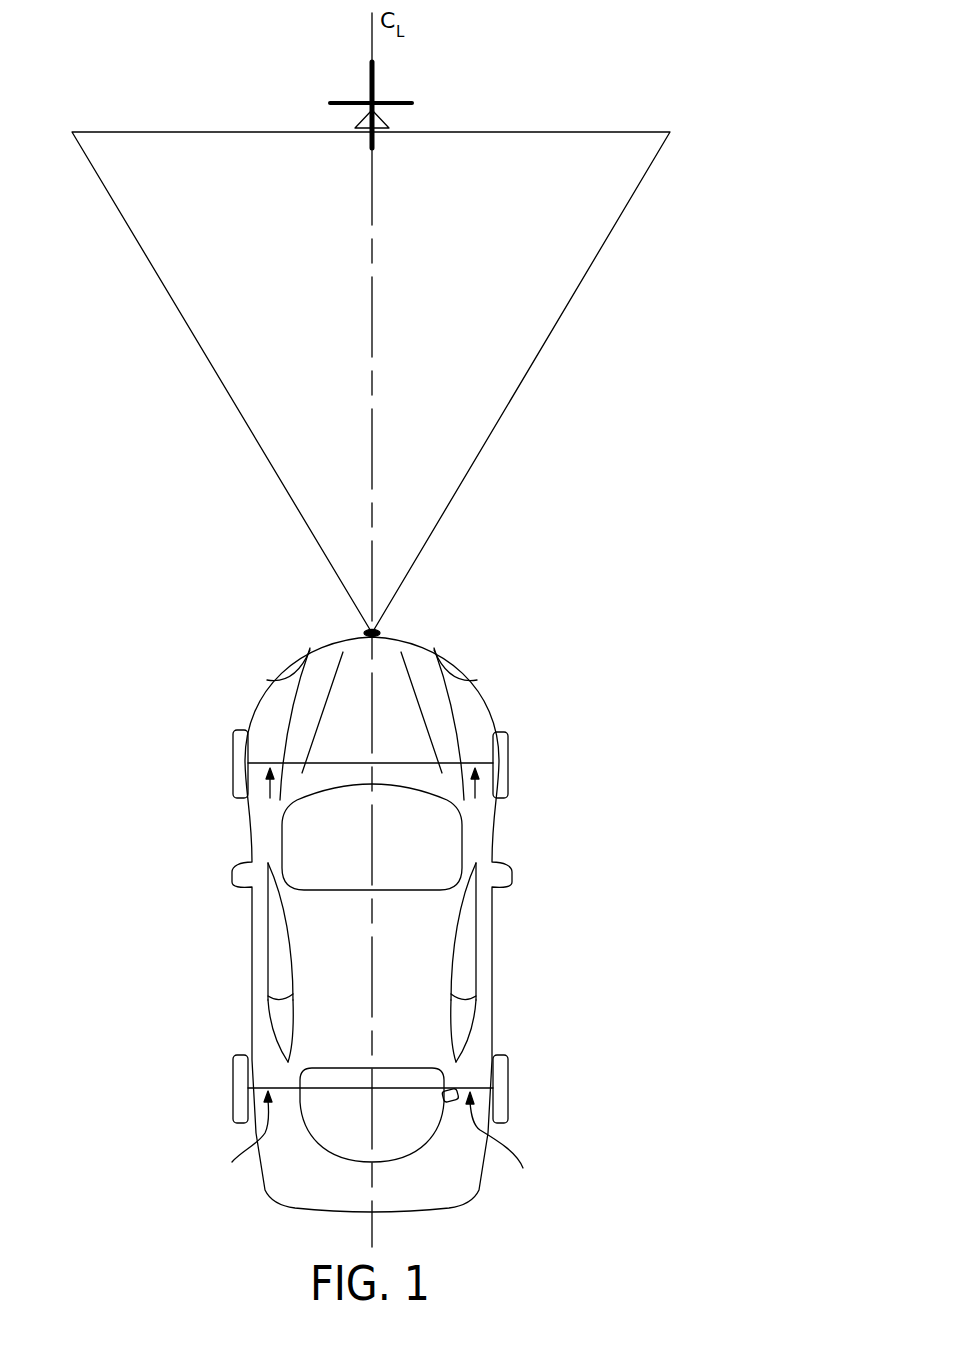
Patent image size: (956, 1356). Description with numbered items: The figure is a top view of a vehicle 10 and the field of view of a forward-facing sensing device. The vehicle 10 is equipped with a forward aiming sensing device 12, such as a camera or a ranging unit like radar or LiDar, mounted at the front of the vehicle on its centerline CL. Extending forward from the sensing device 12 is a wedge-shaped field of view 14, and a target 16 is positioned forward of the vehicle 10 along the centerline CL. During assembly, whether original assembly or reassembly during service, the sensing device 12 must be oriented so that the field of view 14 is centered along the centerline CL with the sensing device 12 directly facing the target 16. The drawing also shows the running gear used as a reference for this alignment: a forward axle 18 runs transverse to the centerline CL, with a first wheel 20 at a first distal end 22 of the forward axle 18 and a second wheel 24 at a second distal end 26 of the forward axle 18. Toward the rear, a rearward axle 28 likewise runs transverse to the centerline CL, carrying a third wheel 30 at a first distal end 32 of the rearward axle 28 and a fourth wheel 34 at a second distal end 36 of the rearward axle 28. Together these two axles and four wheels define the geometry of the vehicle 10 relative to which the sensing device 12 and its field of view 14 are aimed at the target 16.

The vehicle 10 is at (527, 982).
The sensing device 12 is at (381, 633).
The field of view 14 is at (603, 193).
The target 16 is at (390, 128).
The forward axle 18 is at (327, 763).
The first wheel 20 is at (233, 758).
The first distal end of the forward axle 22 is at (268, 798).
The second wheel 24 is at (510, 765).
The second distal end of the forward axle 26 is at (477, 800).
The rearward axle 28 is at (330, 1072).
The third wheel 30 is at (233, 1077).
The first distal end of the rearward axle 32 is at (245, 1141).
The fourth wheel 34 is at (504, 1076).
The second distal end of the rearward axle 36 is at (502, 1147).